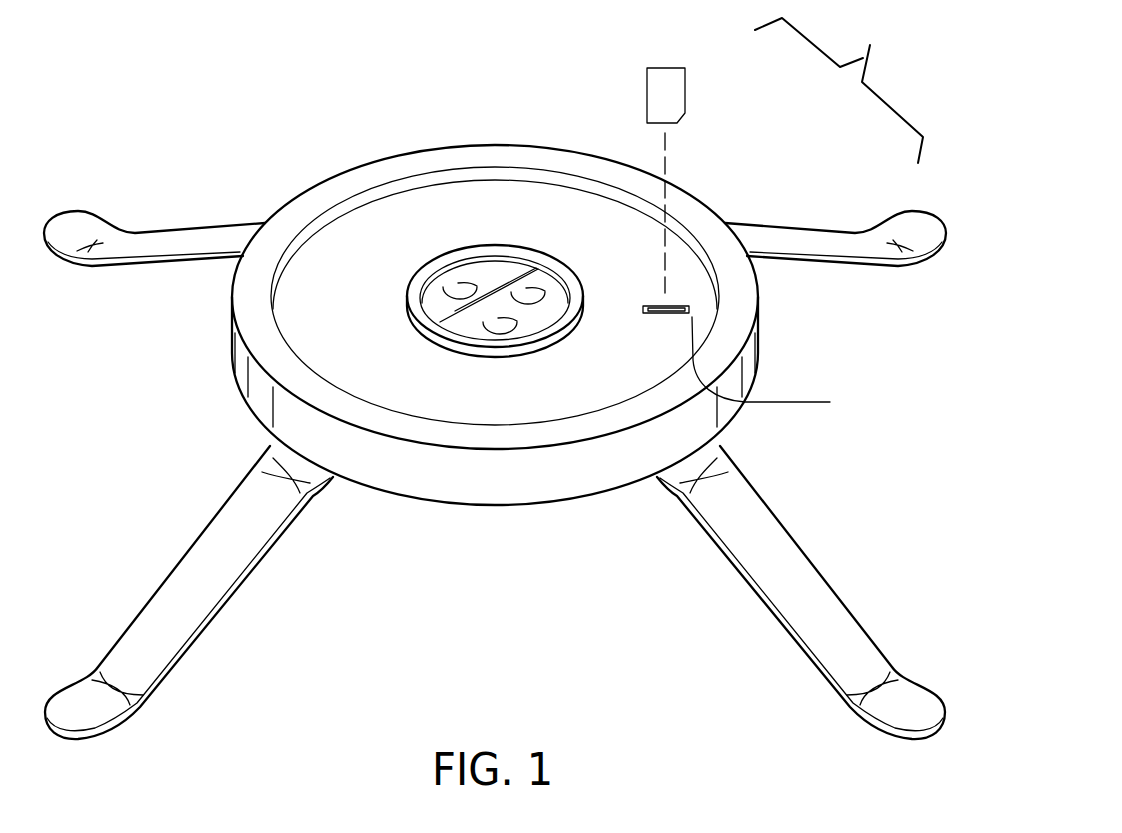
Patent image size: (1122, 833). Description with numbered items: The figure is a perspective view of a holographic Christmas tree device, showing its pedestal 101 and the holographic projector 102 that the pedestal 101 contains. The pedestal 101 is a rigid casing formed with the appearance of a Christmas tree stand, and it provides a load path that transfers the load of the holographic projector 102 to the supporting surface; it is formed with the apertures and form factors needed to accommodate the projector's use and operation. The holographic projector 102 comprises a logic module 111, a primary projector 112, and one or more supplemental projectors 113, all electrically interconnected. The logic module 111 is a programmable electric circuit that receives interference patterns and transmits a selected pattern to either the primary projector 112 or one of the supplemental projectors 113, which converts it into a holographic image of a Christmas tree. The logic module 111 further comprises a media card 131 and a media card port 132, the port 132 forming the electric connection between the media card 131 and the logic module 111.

The pedestal 101 is at (340, 137).
The holographic projector 102 is at (562, 348).
The logic module 111 is at (870, 45).
The primary projector 112 is at (458, 292).
The supplemental projectors 113 is at (498, 333).
The media card 131 is at (690, 100).
The media card port 132 is at (690, 307).